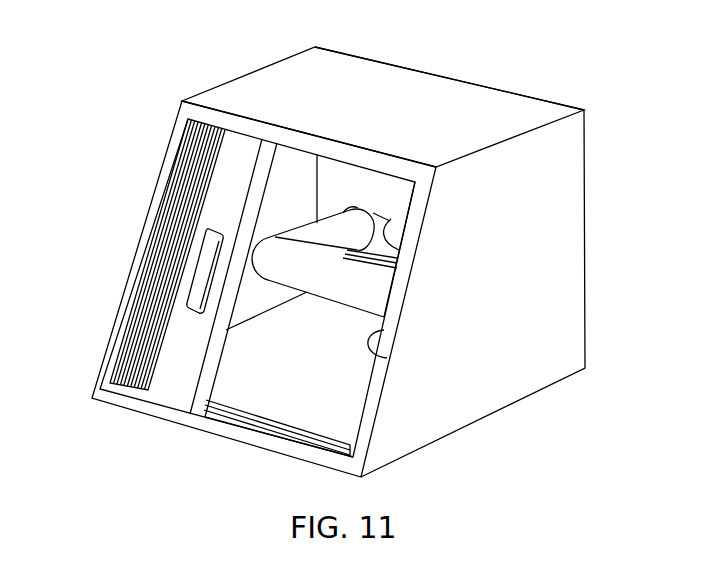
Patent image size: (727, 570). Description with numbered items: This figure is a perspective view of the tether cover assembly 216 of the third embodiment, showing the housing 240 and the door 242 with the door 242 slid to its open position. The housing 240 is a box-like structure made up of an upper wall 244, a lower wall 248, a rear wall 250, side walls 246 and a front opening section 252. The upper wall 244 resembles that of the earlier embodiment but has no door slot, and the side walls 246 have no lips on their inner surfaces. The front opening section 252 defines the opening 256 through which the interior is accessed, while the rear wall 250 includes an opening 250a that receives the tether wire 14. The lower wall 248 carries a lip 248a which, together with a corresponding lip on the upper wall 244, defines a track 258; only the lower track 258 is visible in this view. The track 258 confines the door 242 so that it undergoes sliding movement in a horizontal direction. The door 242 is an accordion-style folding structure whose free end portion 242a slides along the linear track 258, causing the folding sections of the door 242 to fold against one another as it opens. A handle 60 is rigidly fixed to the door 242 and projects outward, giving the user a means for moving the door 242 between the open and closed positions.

The tether cover assembly 216 is at (208, 35).
The housing 240 is at (272, 56).
The door 242 is at (225, 190).
The free end portion 242a is at (175, 373).
The upper wall 244 is at (485, 105).
The side walls 246 is at (532, 293).
The lower wall 248 is at (238, 362).
The lip 248a is at (270, 420).
The rear wall 250 is at (392, 193).
The opening 250a is at (397, 248).
The front opening section 252 is at (373, 393).
The opening 256 is at (388, 358).
The track 258 is at (240, 415).
The handle 60 is at (204, 282).
The tether wire 14 is at (337, 280).